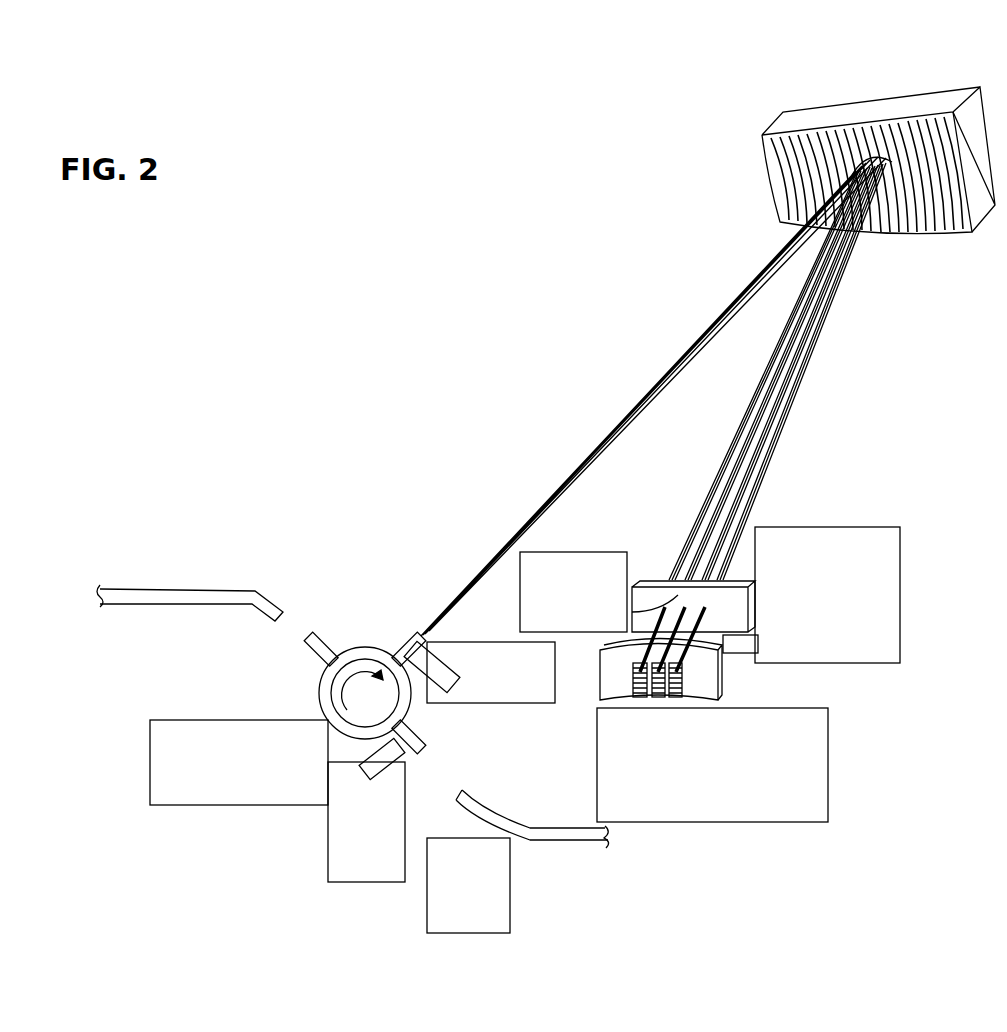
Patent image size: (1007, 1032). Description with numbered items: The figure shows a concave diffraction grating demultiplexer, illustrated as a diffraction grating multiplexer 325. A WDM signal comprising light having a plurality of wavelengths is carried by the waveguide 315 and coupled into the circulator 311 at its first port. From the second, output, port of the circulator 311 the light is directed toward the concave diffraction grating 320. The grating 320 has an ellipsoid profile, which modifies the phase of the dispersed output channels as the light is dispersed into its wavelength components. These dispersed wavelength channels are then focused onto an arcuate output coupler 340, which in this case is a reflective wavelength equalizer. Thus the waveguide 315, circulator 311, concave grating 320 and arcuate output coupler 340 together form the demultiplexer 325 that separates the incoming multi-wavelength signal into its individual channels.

The circulator 311 is at (327, 643).
The waveguide 315 is at (150, 590).
The concave diffraction grating 320 is at (798, 115).
The diffraction grating multiplexer 325 is at (636, 381).
The arcuate output coupler 340 is at (718, 685).